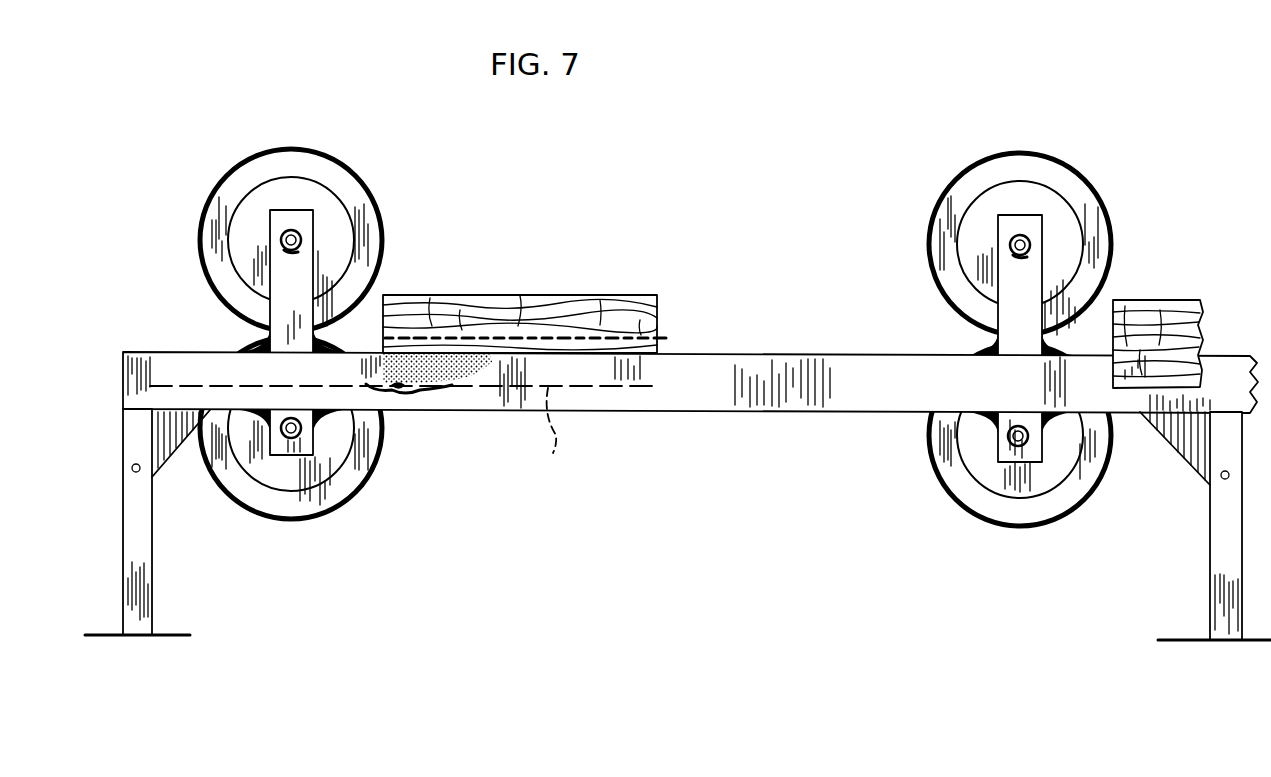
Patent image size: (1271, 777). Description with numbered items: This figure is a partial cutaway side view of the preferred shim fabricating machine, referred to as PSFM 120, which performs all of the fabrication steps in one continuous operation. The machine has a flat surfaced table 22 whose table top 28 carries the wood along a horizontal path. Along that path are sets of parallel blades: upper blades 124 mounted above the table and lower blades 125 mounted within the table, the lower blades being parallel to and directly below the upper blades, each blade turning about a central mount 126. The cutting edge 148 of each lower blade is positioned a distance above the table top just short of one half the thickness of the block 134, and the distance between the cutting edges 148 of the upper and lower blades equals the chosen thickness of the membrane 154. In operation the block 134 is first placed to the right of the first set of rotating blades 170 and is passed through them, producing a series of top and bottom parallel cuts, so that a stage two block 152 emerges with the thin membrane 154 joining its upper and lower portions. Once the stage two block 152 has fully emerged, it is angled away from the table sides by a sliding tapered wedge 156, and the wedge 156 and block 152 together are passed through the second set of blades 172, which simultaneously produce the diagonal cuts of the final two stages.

The flat surfaced table 22 is at (547, 435).
The table top 28 is at (432, 392).
The preferred shim fabricating machine (PSFM) 120 is at (768, 412).
The upper blades 124 is at (254, 205).
The lower blades 125 is at (352, 196).
The wheel axle 126 is at (293, 231).
The block 134 is at (1170, 303).
The cutting edge 148 is at (198, 256).
The stage two block 152 is at (520, 325).
The membrane 154 is at (443, 340).
The sliding tapered wedge 156 is at (462, 370).
The first set of rotating blades 170 is at (987, 340).
The second set of blades 172 is at (277, 467).